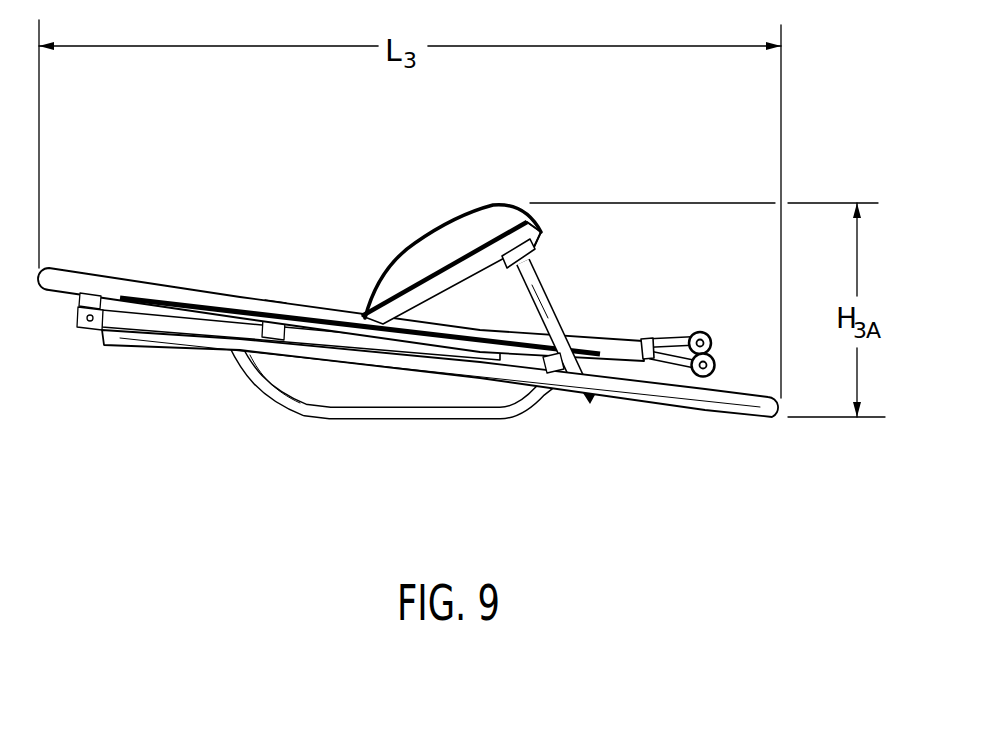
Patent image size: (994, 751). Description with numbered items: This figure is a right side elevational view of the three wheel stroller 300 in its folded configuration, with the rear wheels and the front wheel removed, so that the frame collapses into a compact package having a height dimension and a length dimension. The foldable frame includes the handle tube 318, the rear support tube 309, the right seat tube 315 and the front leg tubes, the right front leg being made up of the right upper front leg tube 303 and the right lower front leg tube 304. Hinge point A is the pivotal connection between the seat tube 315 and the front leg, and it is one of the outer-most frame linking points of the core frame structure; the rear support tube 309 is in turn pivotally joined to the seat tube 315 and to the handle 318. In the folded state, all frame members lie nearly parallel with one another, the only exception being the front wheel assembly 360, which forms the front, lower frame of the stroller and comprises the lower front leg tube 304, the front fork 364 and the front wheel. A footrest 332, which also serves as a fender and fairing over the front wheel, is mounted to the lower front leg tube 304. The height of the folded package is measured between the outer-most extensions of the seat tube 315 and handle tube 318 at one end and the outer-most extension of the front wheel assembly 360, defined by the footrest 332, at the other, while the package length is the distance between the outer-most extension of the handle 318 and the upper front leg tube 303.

The three wheel stroller 300 is at (419, 458).
The right upper front leg tube 303 is at (178, 291).
The right lower front leg tube 304 is at (540, 225).
The rear support tube 309 is at (606, 346).
The right seat tube 315 is at (342, 419).
The handle tube 318 is at (196, 345).
The footrest 332 is at (530, 210).
The front wheel assembly 360 is at (451, 206).
The front fork 364 is at (552, 293).
The hinge point A is at (232, 302).